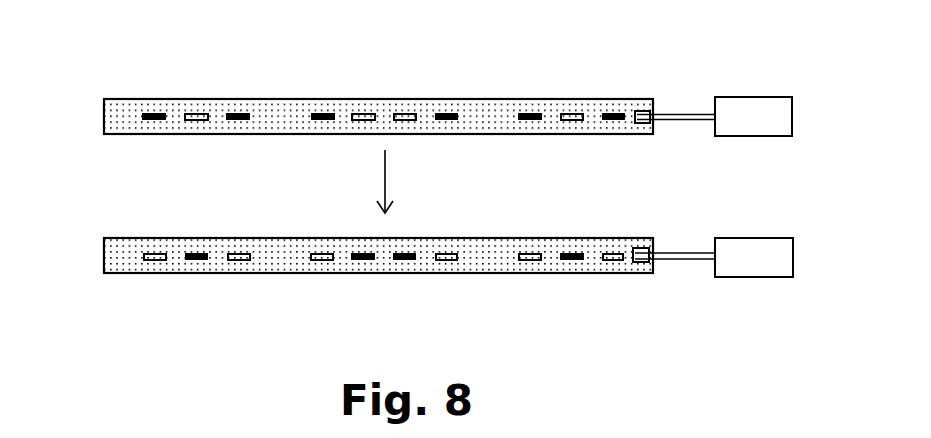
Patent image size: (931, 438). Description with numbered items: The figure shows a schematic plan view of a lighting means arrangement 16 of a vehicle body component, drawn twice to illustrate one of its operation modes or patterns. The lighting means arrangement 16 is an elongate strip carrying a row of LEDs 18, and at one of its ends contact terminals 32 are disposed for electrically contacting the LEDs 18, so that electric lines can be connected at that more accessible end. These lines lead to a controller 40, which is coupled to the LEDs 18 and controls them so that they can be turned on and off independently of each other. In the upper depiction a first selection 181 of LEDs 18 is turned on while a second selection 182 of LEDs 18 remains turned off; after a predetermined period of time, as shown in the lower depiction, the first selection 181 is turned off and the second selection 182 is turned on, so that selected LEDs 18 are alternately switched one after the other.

The lighting means arrangement 16 is at (495, 93).
The LEDs 18 is at (407, 104).
The first selection of LEDs 181 is at (153, 113).
The second selection of LEDs 182 is at (200, 114).
The contact terminals 32 is at (652, 107).
The controller 40 is at (753, 96).